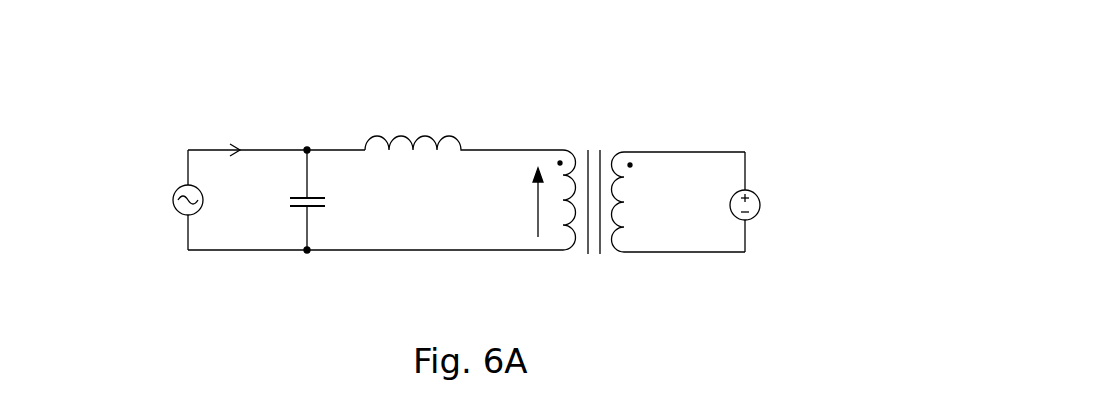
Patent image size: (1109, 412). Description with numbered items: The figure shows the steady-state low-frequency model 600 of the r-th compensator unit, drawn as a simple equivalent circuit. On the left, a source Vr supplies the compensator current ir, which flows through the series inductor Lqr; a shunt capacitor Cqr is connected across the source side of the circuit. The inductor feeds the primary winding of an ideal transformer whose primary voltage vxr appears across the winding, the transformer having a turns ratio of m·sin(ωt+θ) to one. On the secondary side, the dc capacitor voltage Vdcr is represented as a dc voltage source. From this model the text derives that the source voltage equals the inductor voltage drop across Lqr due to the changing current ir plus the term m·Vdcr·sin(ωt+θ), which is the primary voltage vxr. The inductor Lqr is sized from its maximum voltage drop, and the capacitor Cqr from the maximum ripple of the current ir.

The steady-state low-frequency model 600 is at (502, 167).
The compensator unit voltage source Vr is at (173, 200).
The compensator current ir is at (276, 136).
The capacitor C_q,r Cqr is at (329, 200).
The inductor L_q,r Lqr is at (464, 128).
The transformer primary voltage v_x,r vxr is at (532, 200).
The dc capacitor voltage v_dc,r Vdcr is at (767, 202).